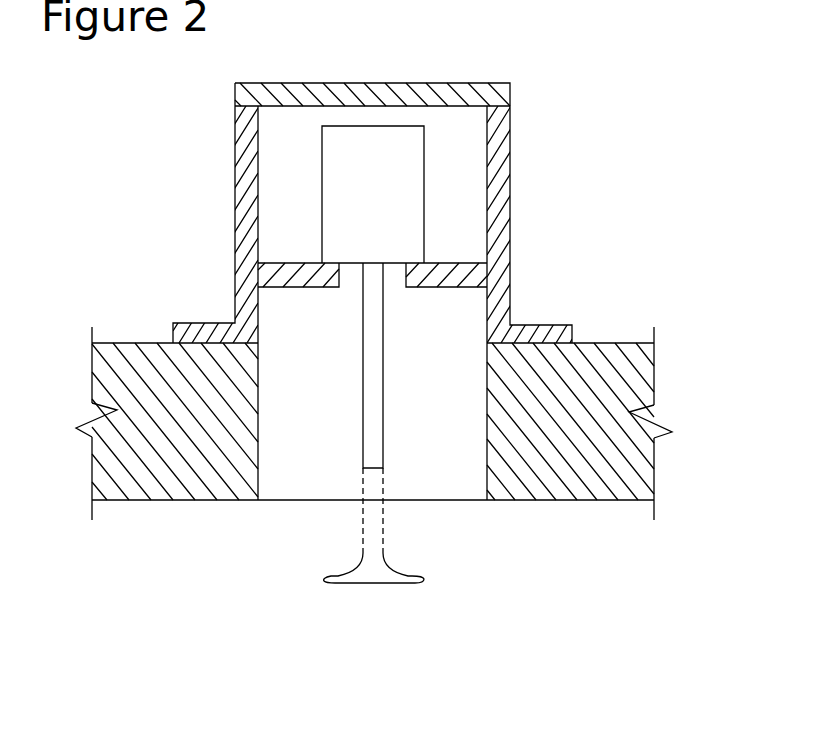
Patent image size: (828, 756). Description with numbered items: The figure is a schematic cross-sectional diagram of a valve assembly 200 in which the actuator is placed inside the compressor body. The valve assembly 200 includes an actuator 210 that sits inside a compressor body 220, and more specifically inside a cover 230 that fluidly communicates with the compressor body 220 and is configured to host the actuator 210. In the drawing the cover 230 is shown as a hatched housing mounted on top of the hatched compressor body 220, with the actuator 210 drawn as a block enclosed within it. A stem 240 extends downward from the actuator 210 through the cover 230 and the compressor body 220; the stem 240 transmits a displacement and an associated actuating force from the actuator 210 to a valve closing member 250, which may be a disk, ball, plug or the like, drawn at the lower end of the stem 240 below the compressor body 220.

The valve assembly 200 is at (648, 67).
The actuator 210 is at (408, 205).
The compressor body 220 is at (600, 367).
The cover 230 is at (248, 172).
The stem 240 is at (372, 447).
The valve closing member 250 is at (417, 577).